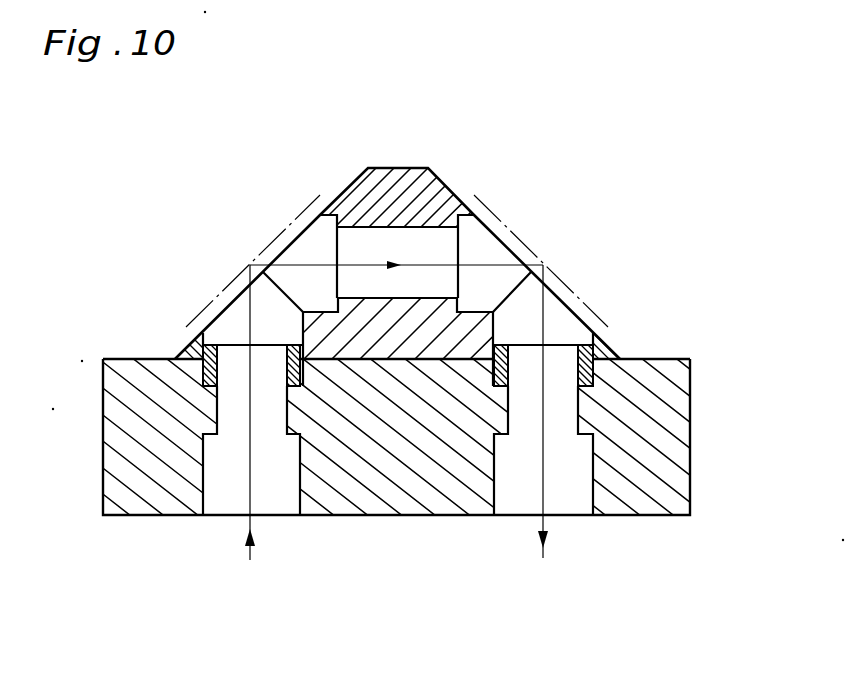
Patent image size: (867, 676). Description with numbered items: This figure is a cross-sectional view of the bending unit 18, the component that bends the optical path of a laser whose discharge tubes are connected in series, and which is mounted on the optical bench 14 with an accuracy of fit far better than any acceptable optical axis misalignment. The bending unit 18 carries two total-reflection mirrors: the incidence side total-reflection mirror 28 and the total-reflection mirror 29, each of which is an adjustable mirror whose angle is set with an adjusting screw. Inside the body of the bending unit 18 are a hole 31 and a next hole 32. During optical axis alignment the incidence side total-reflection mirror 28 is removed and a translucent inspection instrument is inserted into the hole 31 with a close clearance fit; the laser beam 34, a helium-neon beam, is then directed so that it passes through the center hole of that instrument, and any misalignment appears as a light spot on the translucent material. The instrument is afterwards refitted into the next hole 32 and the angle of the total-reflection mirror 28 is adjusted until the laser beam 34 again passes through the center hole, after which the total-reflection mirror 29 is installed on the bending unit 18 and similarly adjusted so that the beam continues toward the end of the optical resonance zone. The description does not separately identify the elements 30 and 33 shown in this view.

The optical bench 14 is at (677, 380).
The bending unit 18 is at (402, 184).
The incidence side total-reflection mirror 28 is at (197, 313).
The total-reflection mirror 29 is at (590, 305).
The inlet port 30 is at (225, 503).
The hole 31 is at (240, 317).
The next hole 32 is at (487, 243).
The outlet port 33 is at (563, 518).
The laser beam 34 is at (250, 550).